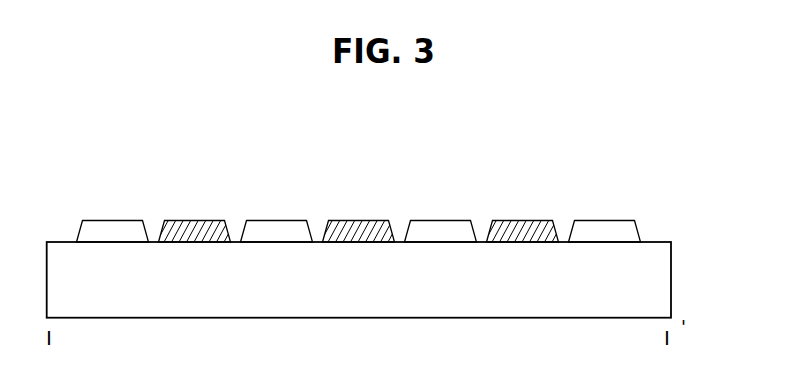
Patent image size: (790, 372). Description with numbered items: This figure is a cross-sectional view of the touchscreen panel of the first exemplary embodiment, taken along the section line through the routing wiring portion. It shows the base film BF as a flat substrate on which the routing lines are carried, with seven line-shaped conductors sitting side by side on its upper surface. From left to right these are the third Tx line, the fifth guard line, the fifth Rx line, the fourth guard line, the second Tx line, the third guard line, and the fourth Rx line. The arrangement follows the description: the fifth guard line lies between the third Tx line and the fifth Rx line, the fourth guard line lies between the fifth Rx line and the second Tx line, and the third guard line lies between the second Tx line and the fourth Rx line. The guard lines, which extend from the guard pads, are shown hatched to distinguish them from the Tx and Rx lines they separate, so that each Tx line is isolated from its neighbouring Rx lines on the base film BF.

The base film BF is at (663, 280).